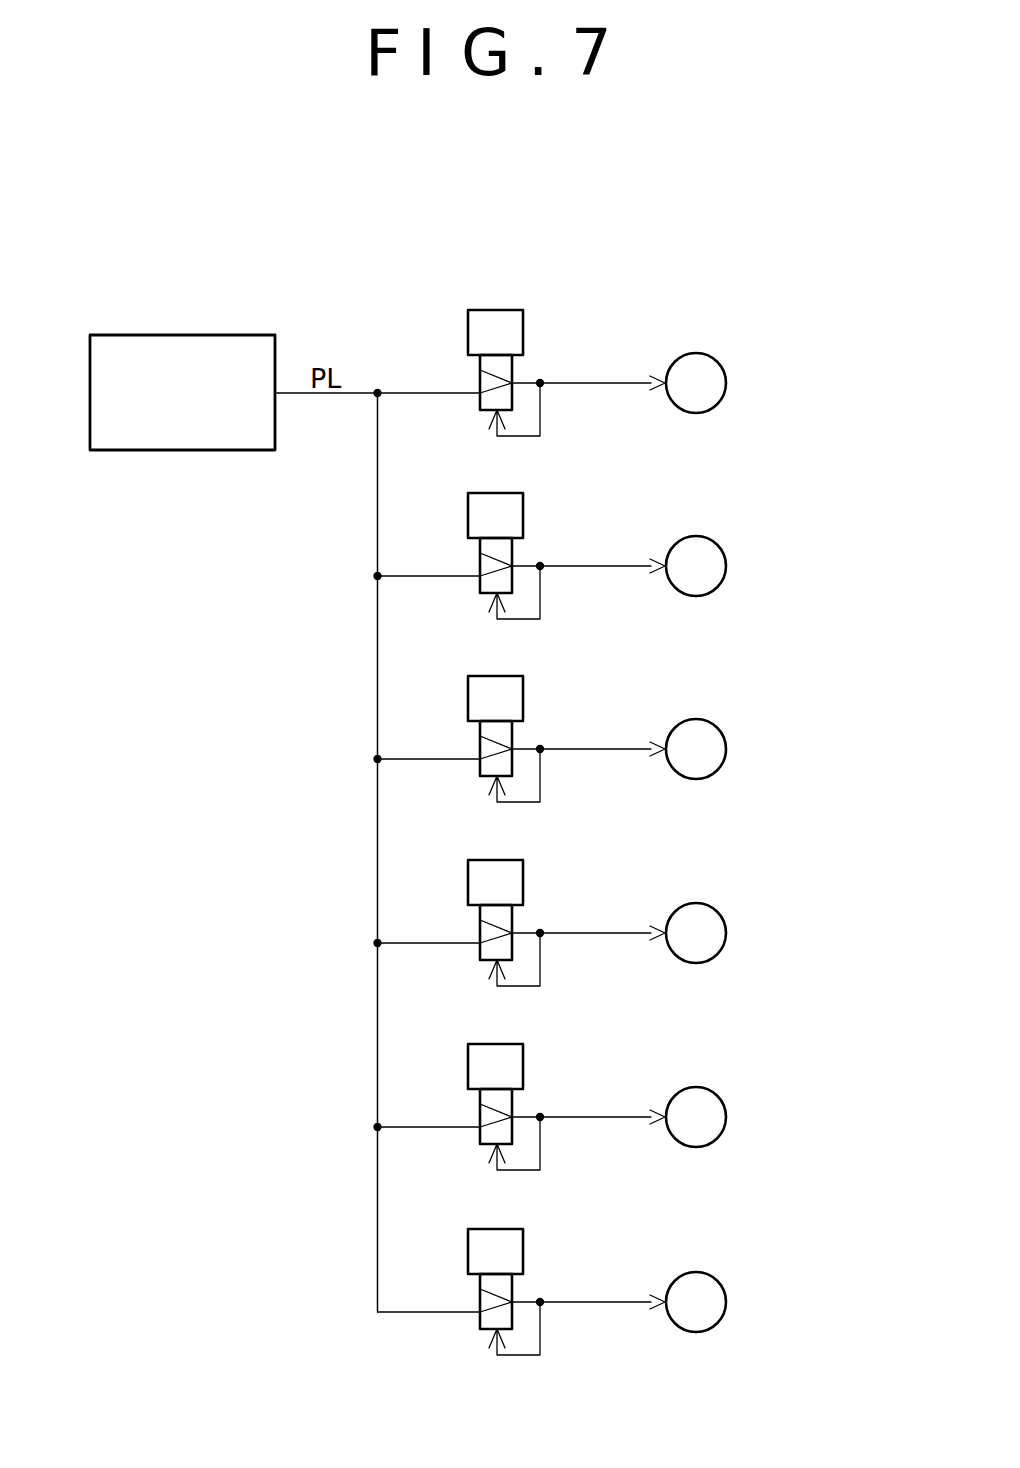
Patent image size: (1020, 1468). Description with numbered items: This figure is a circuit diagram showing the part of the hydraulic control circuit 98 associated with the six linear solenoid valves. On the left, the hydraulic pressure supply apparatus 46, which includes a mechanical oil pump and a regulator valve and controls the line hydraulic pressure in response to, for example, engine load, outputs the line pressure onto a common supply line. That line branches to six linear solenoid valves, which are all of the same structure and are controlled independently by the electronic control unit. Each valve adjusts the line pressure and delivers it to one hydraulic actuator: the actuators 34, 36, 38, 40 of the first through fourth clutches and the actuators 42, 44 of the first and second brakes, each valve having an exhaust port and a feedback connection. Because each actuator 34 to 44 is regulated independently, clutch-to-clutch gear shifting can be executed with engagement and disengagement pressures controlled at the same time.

The hydraulic pressure supply apparatus 46 is at (182, 341).
The hydraulic control circuit 98 is at (718, 292).
The actuator 34 is at (697, 354).
The actuator 36 is at (697, 537).
The actuator 38 is at (697, 720).
The actuator 40 is at (697, 904).
The actuator 42 is at (697, 1088).
The actuator 44 is at (697, 1273).